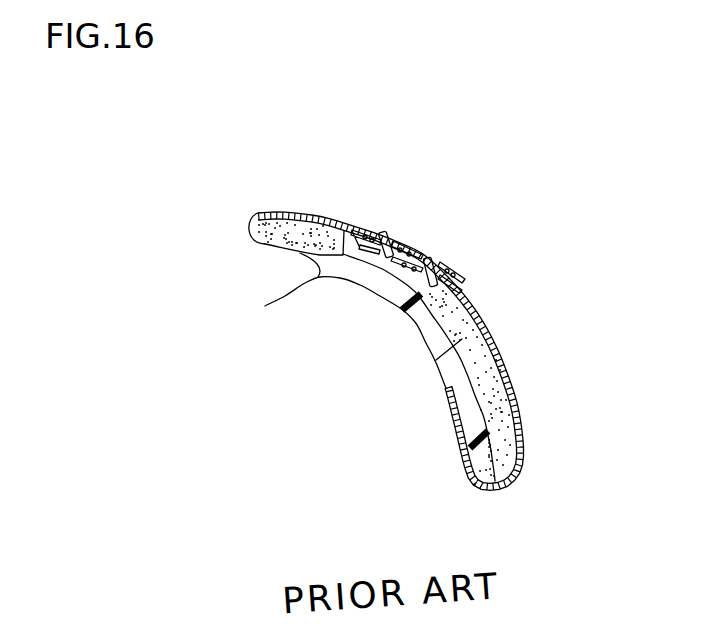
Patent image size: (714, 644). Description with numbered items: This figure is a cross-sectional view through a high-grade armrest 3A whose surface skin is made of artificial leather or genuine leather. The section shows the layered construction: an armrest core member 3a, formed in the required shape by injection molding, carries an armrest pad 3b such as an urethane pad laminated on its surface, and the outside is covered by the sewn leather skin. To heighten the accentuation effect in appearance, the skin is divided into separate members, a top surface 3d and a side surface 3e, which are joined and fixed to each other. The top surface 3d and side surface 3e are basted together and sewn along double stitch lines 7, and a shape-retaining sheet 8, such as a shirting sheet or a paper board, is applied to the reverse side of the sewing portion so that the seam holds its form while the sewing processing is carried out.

The armrest 3A is at (547, 446).
The armrest core member 3a is at (441, 352).
The armrest pad 3b is at (482, 350).
The top surface 3d is at (331, 218).
The side surface 3e is at (517, 397).
The double stitch lines 7 is at (389, 232).
The shape-retaining sheet 8 is at (391, 262).